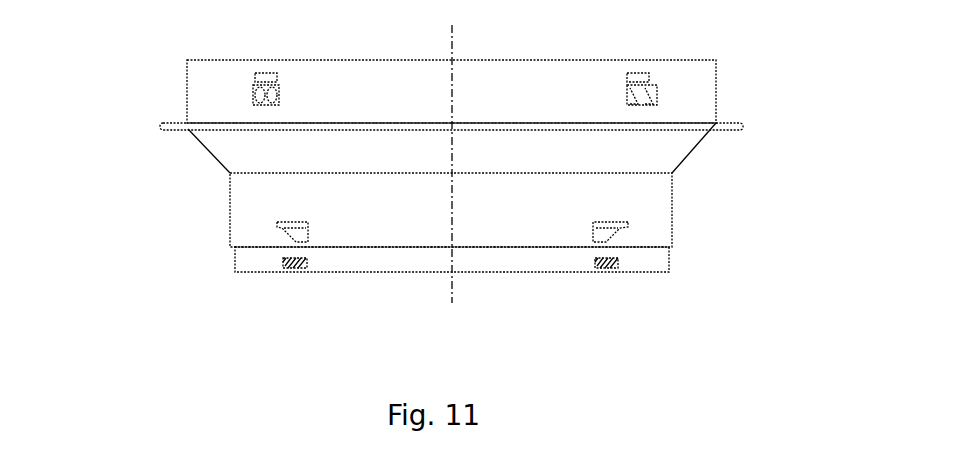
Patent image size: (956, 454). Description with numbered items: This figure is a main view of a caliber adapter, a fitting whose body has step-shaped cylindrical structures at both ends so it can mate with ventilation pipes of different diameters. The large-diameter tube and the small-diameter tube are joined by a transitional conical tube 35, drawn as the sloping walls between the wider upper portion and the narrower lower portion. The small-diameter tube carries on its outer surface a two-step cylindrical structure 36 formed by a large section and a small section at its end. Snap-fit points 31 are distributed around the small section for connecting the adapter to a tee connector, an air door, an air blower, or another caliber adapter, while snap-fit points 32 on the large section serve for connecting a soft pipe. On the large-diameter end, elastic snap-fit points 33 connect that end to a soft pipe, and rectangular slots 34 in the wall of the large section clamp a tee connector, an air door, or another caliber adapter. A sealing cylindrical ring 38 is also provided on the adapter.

The snap-fit point 31 is at (329, 295).
The snap-fit point 32 is at (334, 238).
The elastic snap-fit point 33 is at (391, 138).
The rectangular slot 34 is at (348, 98).
The transitional conical tube 35 is at (514, 162).
The two-step cylindrical structure 36 is at (535, 225).
The sealing cylindrical ring 38 is at (513, 88).